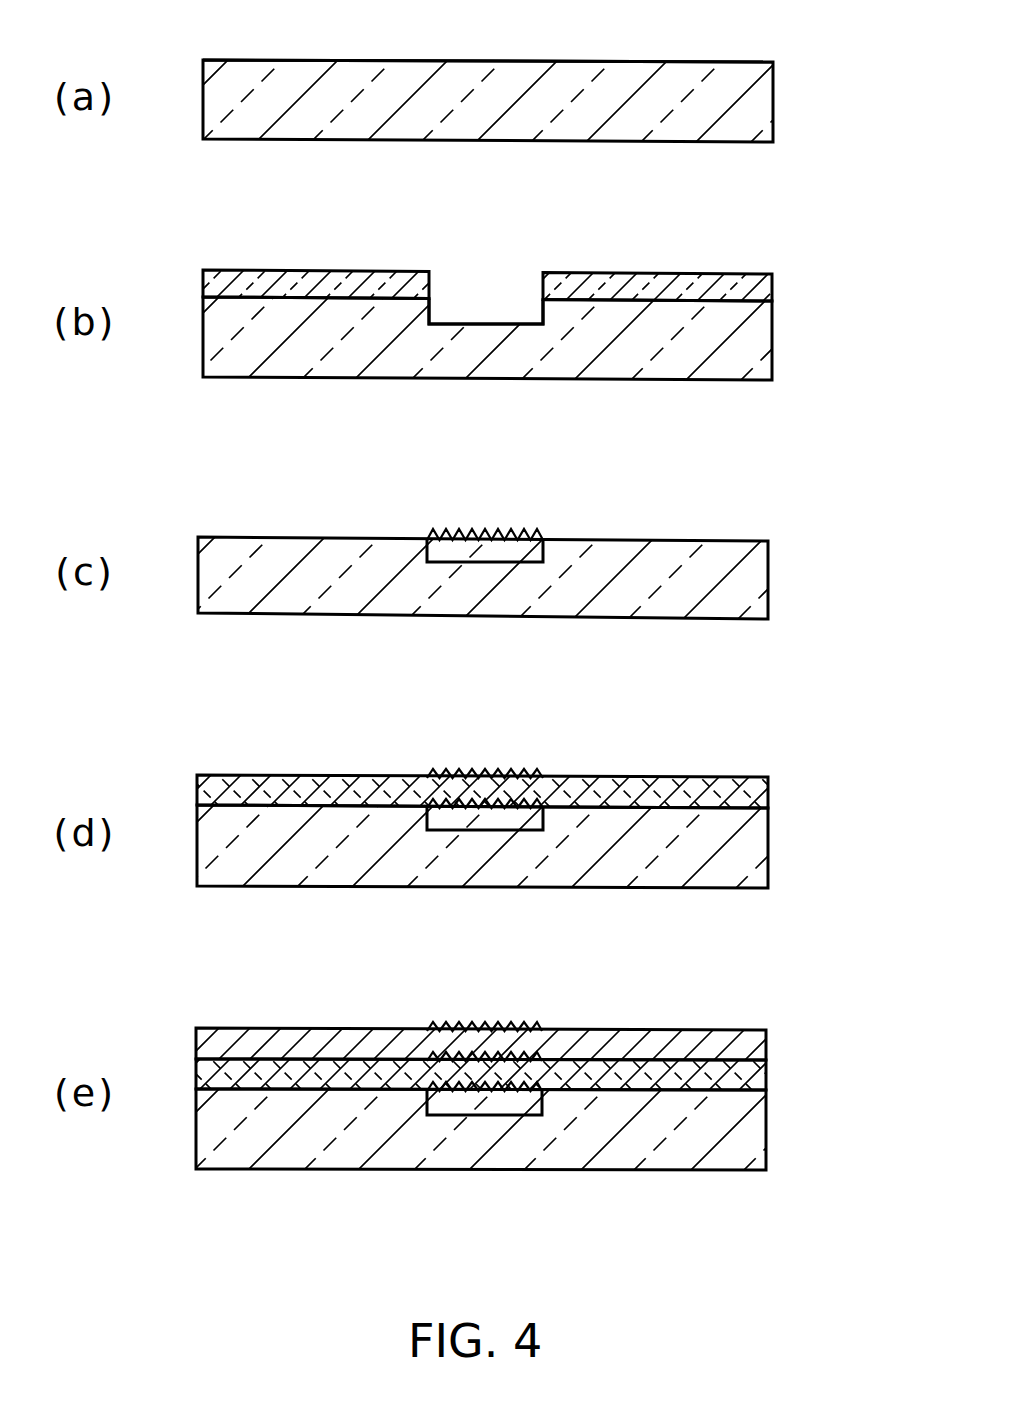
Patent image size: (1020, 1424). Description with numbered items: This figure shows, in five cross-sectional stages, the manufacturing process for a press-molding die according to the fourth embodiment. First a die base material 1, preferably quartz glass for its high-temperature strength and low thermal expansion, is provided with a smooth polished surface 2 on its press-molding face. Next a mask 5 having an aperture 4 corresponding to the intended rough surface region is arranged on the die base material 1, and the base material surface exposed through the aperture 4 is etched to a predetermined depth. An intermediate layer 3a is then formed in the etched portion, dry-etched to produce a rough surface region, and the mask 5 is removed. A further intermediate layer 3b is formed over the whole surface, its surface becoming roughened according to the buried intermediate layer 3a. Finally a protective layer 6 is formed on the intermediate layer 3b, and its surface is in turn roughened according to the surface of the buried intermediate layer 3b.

The die base material 1 is at (752, 118).
The surface 2 is at (585, 61).
The intermediate layer 3a is at (510, 550).
The intermediate layer 3b is at (752, 792).
The aperture 4 is at (507, 300).
The mask 5 is at (753, 290).
The protective layer 6 is at (750, 1053).